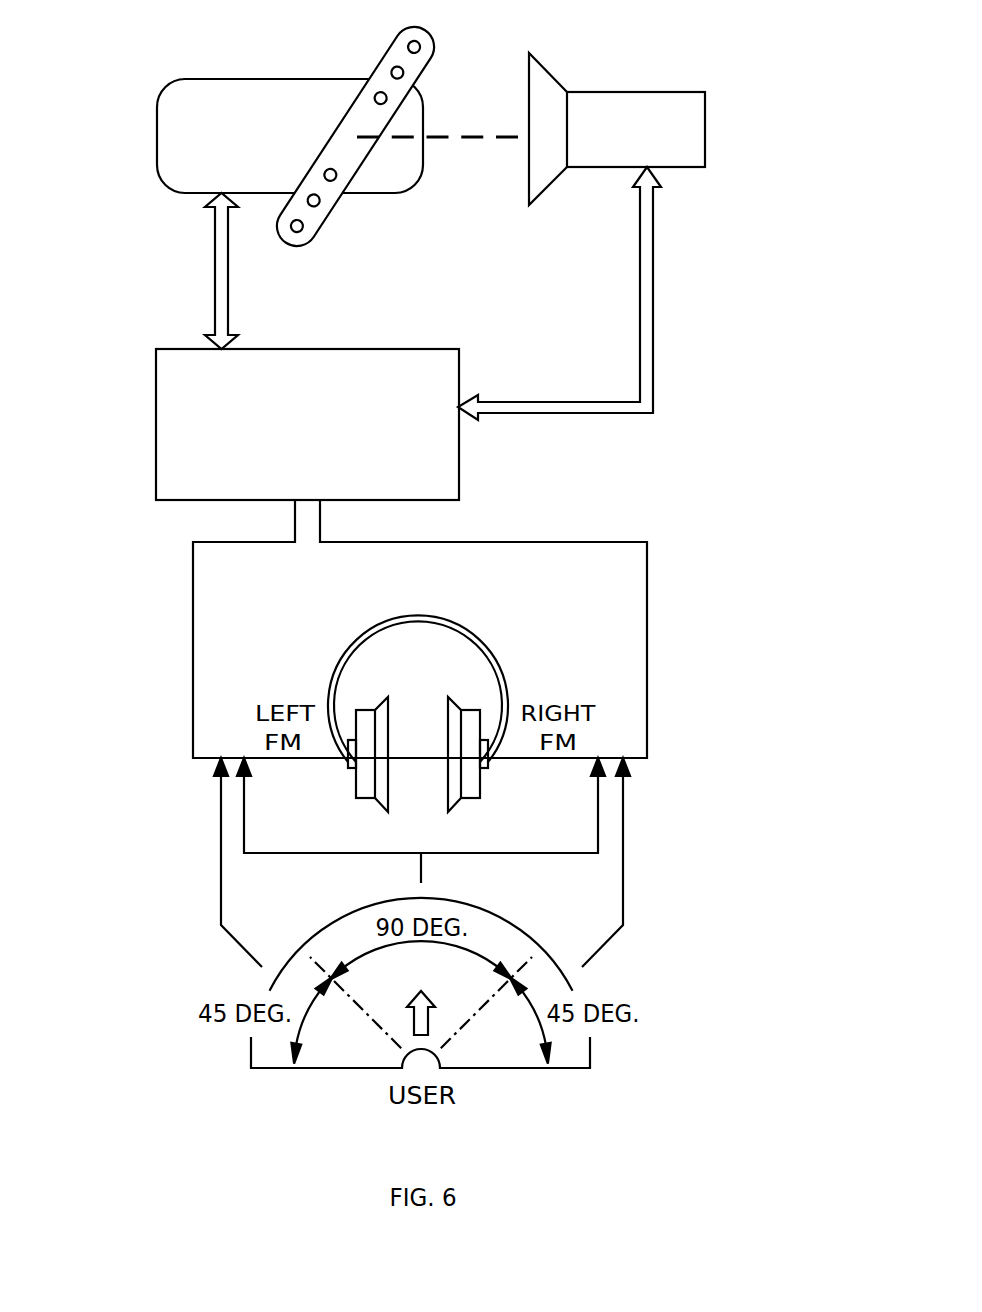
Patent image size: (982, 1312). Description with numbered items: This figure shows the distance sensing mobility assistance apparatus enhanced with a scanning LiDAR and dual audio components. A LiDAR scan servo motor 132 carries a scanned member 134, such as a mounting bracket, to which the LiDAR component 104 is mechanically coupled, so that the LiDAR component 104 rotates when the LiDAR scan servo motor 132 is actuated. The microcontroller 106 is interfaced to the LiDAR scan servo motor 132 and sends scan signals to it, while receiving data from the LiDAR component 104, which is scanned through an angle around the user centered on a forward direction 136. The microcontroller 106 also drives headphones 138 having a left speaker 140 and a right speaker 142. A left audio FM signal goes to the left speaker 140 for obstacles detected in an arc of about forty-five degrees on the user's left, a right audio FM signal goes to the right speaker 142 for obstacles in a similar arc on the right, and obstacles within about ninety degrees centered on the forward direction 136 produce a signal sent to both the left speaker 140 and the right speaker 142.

The LiDAR component 104 is at (702, 100).
The microcontroller 106 is at (168, 368).
The LiDAR scan servo motor 132 is at (172, 107).
The scanned member 134 is at (393, 53).
The forward direction 136 is at (412, 1019).
The headphones 138 is at (345, 638).
The left speaker 140 is at (353, 797).
The right speaker 142 is at (483, 797).